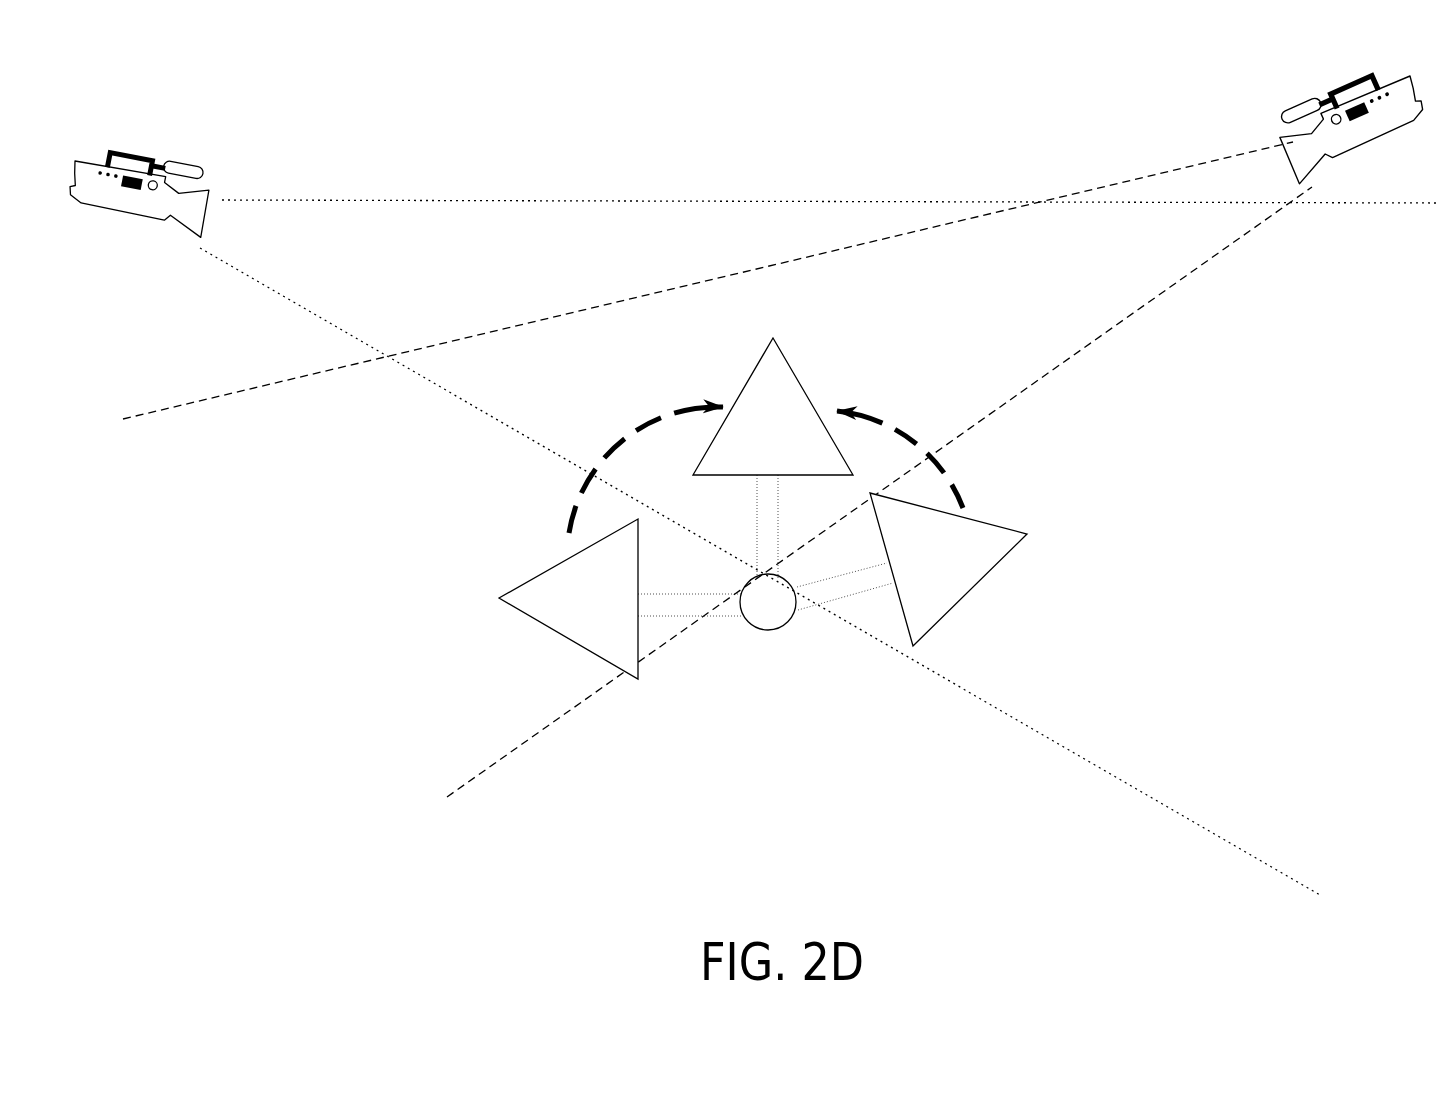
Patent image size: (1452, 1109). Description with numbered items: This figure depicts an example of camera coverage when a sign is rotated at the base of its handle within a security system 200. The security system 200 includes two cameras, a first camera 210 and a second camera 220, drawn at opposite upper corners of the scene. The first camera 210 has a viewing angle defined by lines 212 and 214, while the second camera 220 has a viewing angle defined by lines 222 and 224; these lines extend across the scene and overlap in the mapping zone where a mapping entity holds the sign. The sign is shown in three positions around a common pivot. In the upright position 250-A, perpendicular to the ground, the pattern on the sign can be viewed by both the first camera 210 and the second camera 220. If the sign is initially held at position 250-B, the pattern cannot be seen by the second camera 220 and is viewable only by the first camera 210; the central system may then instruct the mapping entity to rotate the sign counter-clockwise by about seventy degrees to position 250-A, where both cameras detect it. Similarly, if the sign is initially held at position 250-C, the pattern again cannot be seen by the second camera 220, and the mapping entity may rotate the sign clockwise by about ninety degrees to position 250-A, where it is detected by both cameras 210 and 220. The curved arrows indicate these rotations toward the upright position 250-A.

The security system 200 is at (167, 900).
The camera 210 is at (165, 148).
The line 212 is at (265, 287).
The line 214 is at (428, 188).
The camera 220 is at (1295, 112).
The line 222 is at (1095, 180).
The line 224 is at (1203, 268).
The upright position 250-A is at (793, 350).
The position 250-B is at (997, 580).
The position 250-C is at (535, 573).